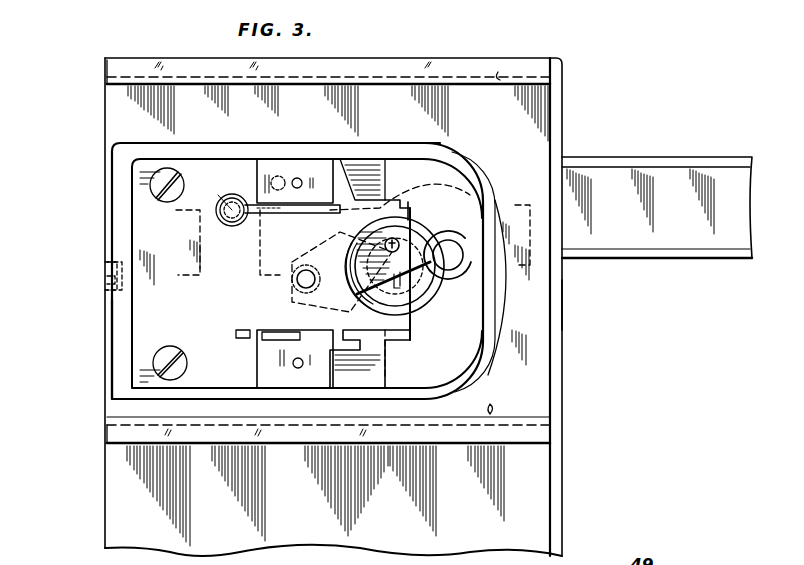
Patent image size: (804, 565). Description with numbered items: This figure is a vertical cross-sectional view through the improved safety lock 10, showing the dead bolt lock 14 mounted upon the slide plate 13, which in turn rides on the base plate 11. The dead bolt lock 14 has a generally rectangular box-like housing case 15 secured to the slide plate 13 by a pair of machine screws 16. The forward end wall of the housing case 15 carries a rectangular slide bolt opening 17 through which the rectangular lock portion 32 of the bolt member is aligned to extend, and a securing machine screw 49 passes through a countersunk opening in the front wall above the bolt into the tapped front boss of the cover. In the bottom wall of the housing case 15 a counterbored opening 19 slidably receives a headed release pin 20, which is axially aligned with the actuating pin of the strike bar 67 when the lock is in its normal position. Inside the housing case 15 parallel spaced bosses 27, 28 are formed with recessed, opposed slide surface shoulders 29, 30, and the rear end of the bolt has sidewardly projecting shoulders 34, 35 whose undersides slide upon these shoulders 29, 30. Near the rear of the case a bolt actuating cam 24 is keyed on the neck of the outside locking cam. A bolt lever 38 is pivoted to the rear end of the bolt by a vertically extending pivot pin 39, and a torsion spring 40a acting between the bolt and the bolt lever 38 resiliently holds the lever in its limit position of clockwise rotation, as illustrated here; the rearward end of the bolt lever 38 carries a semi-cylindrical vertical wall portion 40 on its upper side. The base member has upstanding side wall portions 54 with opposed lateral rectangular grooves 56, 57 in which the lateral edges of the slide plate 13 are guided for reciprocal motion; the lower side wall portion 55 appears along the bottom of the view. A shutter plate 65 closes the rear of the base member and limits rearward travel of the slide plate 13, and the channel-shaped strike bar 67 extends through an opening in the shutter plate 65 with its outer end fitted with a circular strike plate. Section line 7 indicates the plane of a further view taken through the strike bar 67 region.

The section line 7- 7 is at (71, 320).
The safety lock 10 is at (400, 128).
The base plate 11 is at (538, 480).
The slide plate 13 is at (530, 347).
The dead bolt lock 14 is at (142, 143).
The housing case 15 is at (455, 145).
The machine screws 16 is at (184, 187).
The slide bolt opening 17 is at (126, 332).
The counterbored opening 19 is at (240, 200).
The release pin 20 is at (232, 194).
The bolt actuating cam 24 is at (420, 314).
The boss 27 is at (298, 177).
The boss 28 is at (278, 367).
The slide surface shoulder 29 is at (290, 215).
The slide surface shoulder 30 is at (275, 340).
The lock portion 32 is at (146, 300).
The shoulder 34 is at (390, 212).
The shoulder 35 is at (388, 352).
The bolt lever 38 is at (456, 224).
The pivot pin 39 is at (298, 283).
The semi-cylindrical vertical wall portion 40 is at (468, 238).
The torsion spring 40a is at (342, 269).
The securing machine screw 49 is at (108, 268).
The side wall portions 54 is at (109, 68).
The lower door rail 55 is at (113, 437).
The lateral rectangular groove 56 is at (501, 78).
The lateral rectangular groove 57 is at (490, 414).
The shutter plate 65 is at (565, 313).
The strike bar 67 is at (680, 242).